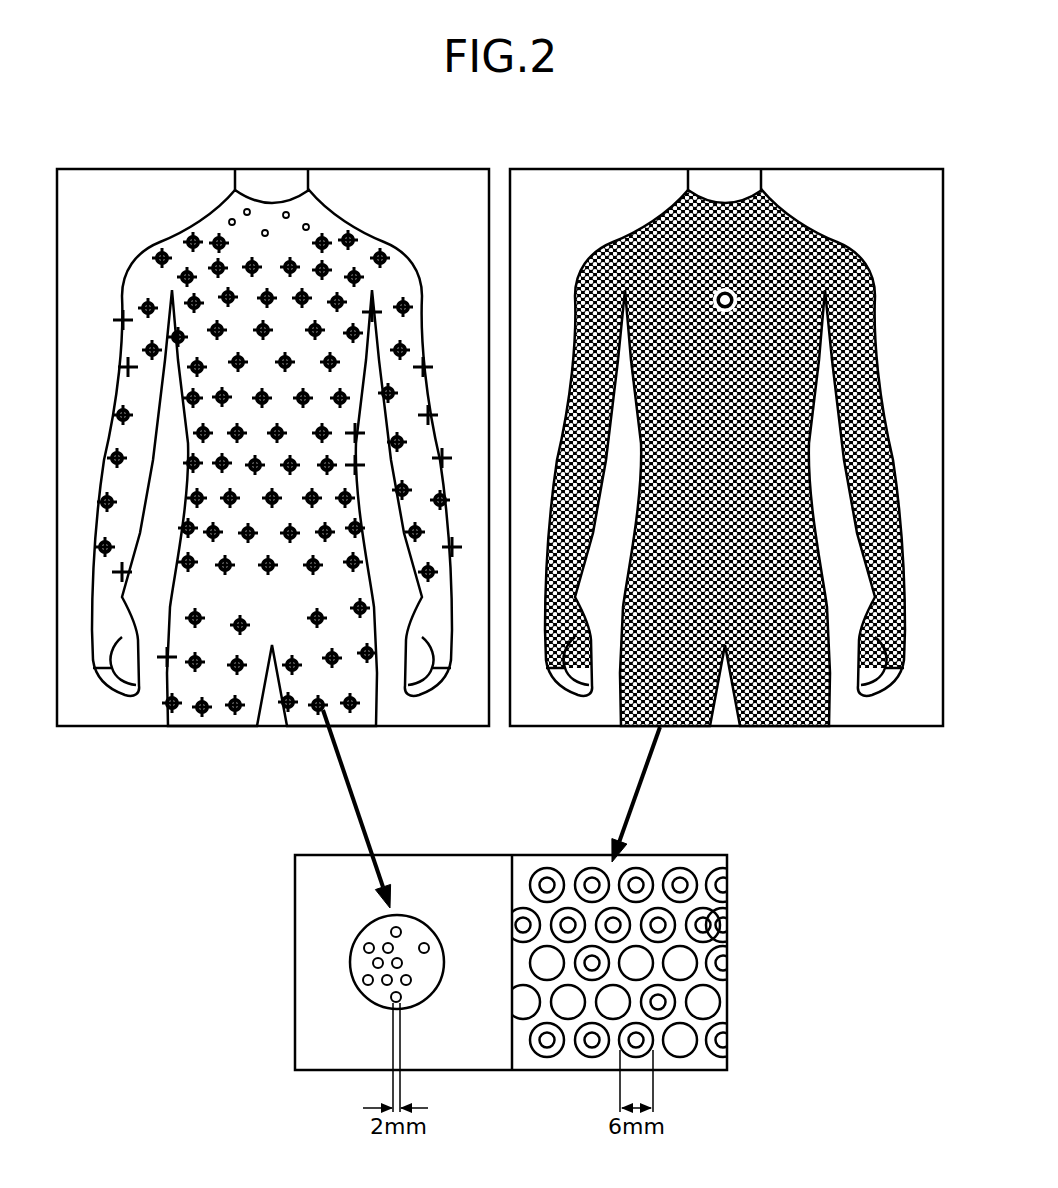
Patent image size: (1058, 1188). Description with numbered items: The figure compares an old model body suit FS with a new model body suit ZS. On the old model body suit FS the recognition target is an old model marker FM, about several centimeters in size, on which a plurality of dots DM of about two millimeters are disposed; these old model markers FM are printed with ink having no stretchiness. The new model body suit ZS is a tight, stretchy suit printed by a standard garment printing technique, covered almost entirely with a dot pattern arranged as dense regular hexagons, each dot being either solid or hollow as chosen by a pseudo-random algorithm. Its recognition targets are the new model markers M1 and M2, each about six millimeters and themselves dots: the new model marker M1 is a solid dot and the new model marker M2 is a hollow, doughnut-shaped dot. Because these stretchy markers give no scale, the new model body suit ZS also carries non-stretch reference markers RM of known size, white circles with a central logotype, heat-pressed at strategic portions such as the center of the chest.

The old model body suit FS is at (180, 236).
The new model body suit ZS is at (632, 233).
The reference marker RM is at (737, 290).
The old model marker FM is at (350, 962).
The dot DM is at (385, 998).
The new model marker M1 is at (697, 955).
The new model marker M2 is at (724, 921).